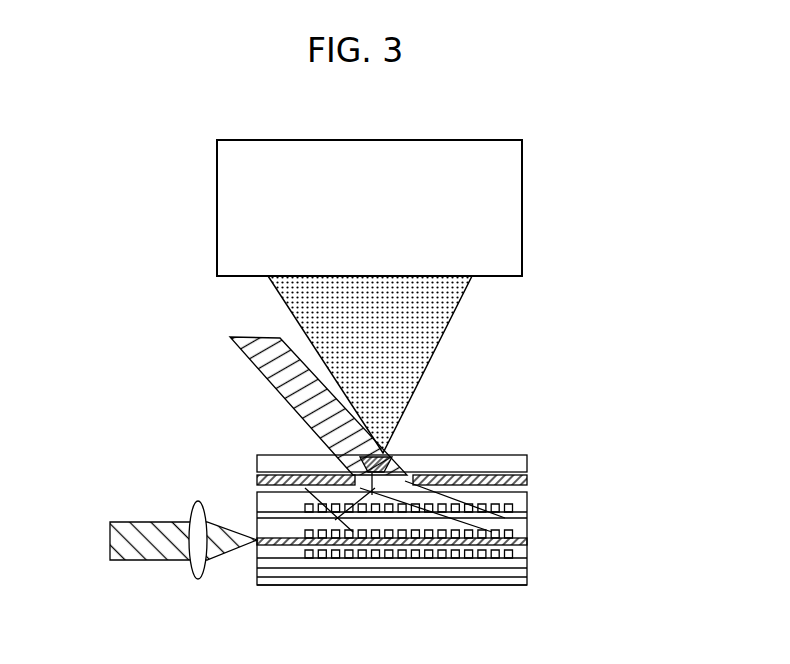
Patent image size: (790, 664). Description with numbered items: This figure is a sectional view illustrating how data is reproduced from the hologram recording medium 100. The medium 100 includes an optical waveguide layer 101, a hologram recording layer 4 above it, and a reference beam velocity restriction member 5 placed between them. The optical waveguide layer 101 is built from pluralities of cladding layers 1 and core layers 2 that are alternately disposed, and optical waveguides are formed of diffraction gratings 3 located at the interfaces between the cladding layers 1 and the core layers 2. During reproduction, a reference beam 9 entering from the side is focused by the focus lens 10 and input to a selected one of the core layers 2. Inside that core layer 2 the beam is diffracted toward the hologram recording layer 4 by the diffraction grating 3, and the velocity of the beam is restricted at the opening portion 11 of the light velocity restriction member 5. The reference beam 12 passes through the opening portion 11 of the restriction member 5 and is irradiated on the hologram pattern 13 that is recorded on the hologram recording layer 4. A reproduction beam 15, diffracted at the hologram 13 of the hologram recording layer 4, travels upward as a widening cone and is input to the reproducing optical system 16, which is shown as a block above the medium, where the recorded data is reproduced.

The cladding layer 1 is at (527, 528).
The core layer 2 is at (296, 560).
The diffraction grating 3 is at (497, 558).
The hologram recording layer 4 is at (515, 455).
The reference beam velocity restriction member 5 is at (257, 479).
The reference beam 9 is at (115, 541).
The focus lens 10 is at (197, 576).
The opening portion 11 is at (415, 455).
The reference beam 12 is at (298, 402).
The hologram pattern 13 is at (389, 453).
The reproduction beam 15 is at (450, 317).
The reproducing optical system 16 is at (487, 218).
The hologram recording medium 100 is at (643, 455).
The optical waveguide layer 101 is at (580, 492).